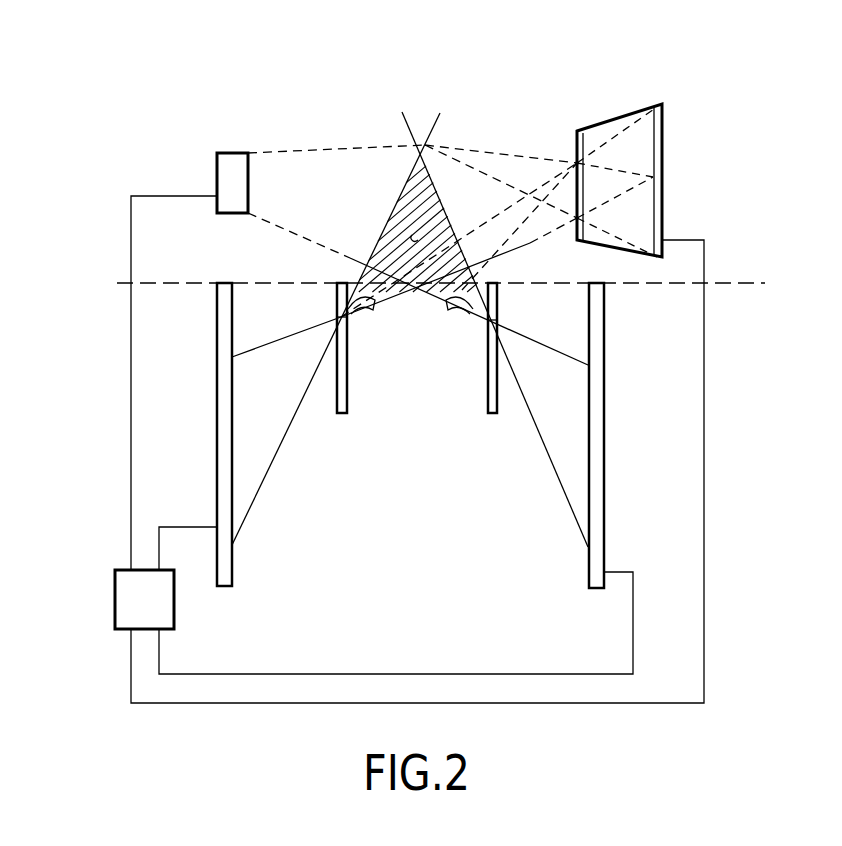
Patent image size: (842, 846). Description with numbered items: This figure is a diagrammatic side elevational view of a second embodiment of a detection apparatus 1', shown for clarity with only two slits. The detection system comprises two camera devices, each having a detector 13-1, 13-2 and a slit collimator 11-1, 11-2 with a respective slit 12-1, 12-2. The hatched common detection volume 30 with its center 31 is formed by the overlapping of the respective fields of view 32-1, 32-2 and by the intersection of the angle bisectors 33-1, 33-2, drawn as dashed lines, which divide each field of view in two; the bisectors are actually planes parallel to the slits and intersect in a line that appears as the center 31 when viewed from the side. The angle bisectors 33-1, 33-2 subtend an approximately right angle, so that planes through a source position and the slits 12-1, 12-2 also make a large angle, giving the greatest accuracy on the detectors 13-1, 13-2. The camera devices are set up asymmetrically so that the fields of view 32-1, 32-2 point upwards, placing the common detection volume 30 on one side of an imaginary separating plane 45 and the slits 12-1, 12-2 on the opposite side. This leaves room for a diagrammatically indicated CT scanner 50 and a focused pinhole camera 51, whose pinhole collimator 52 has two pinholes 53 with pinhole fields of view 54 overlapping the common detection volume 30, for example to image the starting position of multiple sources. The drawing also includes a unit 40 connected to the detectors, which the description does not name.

The detection apparatus 1' is at (106, 91).
The slit collimator 11-1 is at (343, 415).
The slit collimator 11-2 is at (494, 415).
The slit 12-1 is at (337, 318).
The slit 12-2 is at (497, 320).
The detector 13-1 is at (233, 572).
The detector 13-2 is at (588, 573).
The common detection volume 30 is at (415, 190).
The center 31 is at (412, 237).
The field of view 32-1 is at (370, 303).
The field of view 32-2 is at (456, 302).
The angle bisector 33-1 is at (472, 187).
The angle bisector 33-2 is at (384, 201).
The control unit 40 is at (115, 598).
The imaginary separating plane 45 is at (734, 283).
The CT scanner 50 is at (217, 171).
The focused pinhole camera 51 is at (628, 98).
The pinhole collimator 52 is at (578, 130).
The pinholes 53 is at (577, 163).
The pinhole fields of view 54 is at (512, 167).